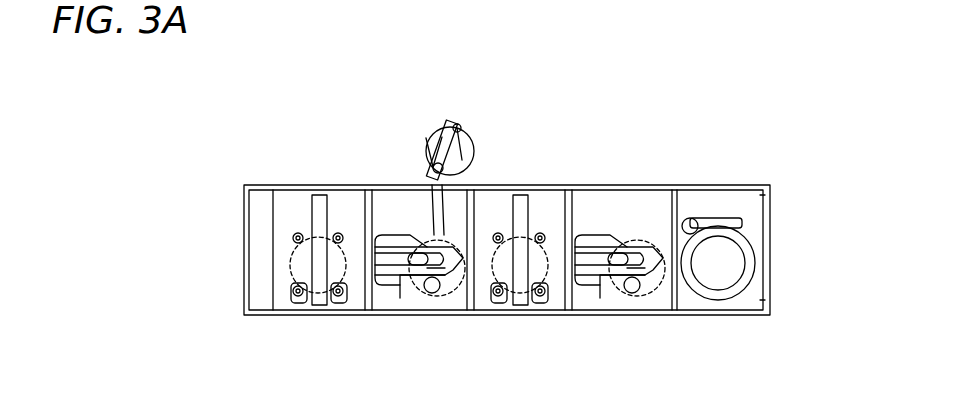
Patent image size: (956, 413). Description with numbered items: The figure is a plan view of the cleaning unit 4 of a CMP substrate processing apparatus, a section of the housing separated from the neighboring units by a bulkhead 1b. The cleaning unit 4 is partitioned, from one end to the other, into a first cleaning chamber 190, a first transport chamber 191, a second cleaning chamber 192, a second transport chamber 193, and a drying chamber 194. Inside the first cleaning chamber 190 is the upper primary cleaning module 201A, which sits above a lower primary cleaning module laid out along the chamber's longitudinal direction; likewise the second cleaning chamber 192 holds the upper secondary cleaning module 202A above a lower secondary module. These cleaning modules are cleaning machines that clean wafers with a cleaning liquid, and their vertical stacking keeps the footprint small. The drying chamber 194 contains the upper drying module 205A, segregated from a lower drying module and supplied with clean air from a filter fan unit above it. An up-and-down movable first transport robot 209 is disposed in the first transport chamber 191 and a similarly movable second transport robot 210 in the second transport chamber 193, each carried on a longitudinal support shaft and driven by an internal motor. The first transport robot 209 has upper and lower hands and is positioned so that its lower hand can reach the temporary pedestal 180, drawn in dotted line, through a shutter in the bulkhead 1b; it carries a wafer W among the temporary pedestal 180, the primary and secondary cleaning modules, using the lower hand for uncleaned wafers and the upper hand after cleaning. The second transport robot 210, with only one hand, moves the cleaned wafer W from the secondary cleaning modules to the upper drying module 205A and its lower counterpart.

The bulkhead 1b is at (283, 184).
The cleaning unit 4 is at (378, 172).
The wafer W is at (433, 126).
The temporary pedestal 180 is at (470, 146).
The first cleaning chamber 190 is at (353, 312).
The first transport chamber 191 is at (449, 312).
The second cleaning chamber 192 is at (552, 312).
The second transport chamber 193 is at (653, 312).
The drying chamber 194 is at (748, 312).
The upper primary cleaning module 201A is at (317, 312).
The upper secondary cleaning module 202A is at (520, 312).
The first transport robot 209 is at (400, 298).
The second transport robot 210 is at (600, 298).
The upper drying module 205A is at (712, 300).